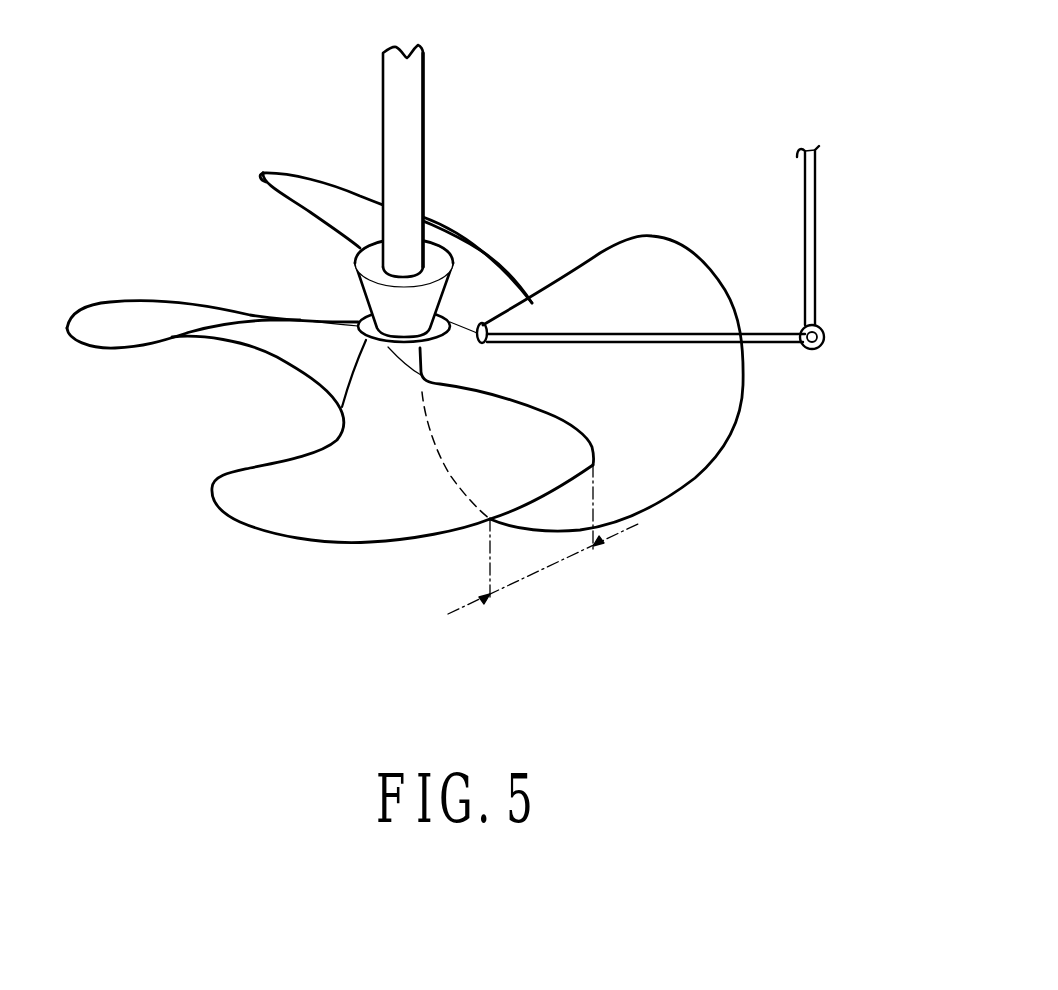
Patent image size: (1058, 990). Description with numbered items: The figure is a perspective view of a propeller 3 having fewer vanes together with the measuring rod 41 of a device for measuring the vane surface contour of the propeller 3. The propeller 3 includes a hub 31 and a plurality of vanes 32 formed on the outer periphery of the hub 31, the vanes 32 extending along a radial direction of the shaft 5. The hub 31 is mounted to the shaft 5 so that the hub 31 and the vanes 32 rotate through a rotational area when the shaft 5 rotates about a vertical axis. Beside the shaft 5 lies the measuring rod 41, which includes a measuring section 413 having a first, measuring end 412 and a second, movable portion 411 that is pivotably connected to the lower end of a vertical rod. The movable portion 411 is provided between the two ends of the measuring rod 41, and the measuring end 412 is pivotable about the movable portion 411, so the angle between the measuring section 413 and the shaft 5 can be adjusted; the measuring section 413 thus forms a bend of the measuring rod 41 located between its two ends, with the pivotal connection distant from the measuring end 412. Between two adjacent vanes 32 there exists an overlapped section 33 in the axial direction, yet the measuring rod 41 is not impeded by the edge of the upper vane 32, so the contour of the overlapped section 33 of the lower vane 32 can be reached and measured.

The propeller 3 is at (353, 153).
The shaft 5 is at (413, 103).
The hub 31 is at (440, 257).
The vanes 32 is at (376, 517).
The overlapped section 33 is at (545, 568).
The measuring rod 41 is at (836, 257).
The movable portion 411 is at (818, 350).
The measuring end 412 is at (484, 327).
The measuring section 413 is at (693, 344).